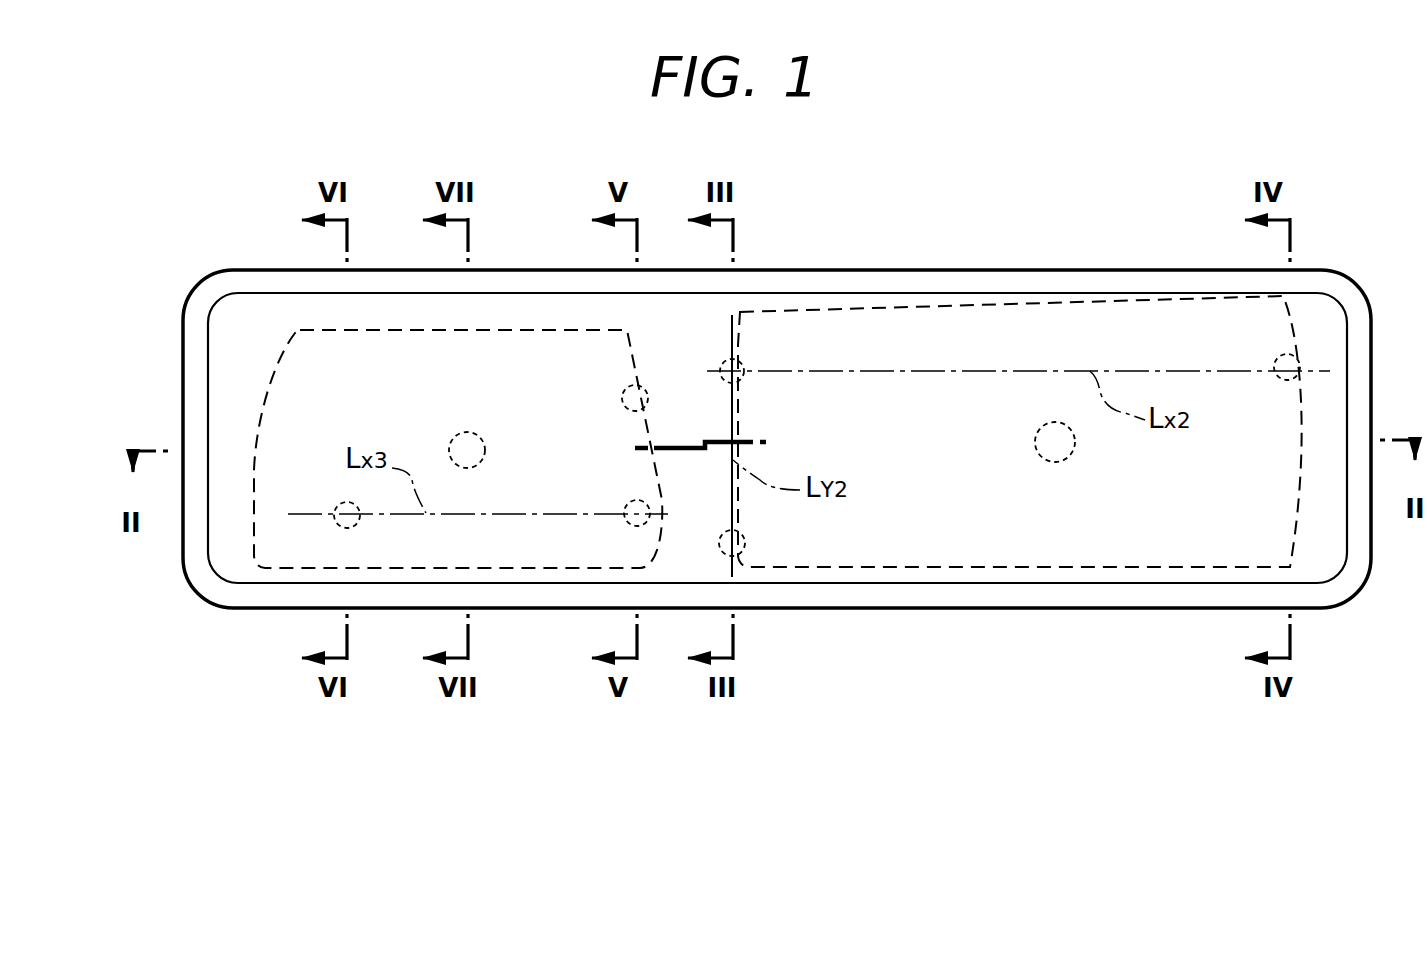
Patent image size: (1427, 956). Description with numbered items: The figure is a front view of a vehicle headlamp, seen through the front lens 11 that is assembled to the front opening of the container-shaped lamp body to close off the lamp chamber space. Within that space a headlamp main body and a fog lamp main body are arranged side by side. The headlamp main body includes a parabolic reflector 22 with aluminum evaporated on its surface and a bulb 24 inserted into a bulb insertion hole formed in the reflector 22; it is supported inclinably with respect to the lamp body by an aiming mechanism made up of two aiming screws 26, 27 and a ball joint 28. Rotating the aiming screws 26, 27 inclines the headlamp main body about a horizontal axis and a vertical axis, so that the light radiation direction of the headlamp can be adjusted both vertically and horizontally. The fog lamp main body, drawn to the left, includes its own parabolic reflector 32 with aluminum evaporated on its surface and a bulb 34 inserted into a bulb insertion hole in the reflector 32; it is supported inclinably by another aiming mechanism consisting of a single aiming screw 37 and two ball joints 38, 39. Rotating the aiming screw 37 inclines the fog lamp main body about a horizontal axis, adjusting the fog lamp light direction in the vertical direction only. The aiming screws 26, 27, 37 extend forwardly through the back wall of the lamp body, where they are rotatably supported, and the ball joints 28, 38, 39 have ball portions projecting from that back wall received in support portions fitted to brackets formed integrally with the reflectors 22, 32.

The front lens 11 is at (943, 332).
The parabolic reflector 22 is at (835, 300).
The bulb 24 is at (1064, 466).
The aiming screw 26 is at (748, 543).
The aiming screw 27 is at (1278, 381).
The ball joint 28 is at (744, 378).
The parabolic reflector 32 is at (298, 322).
The bulb 34 is at (453, 437).
The aiming screw 37 is at (621, 394).
The ball joint 38 is at (625, 503).
The ball joint 39 is at (341, 498).